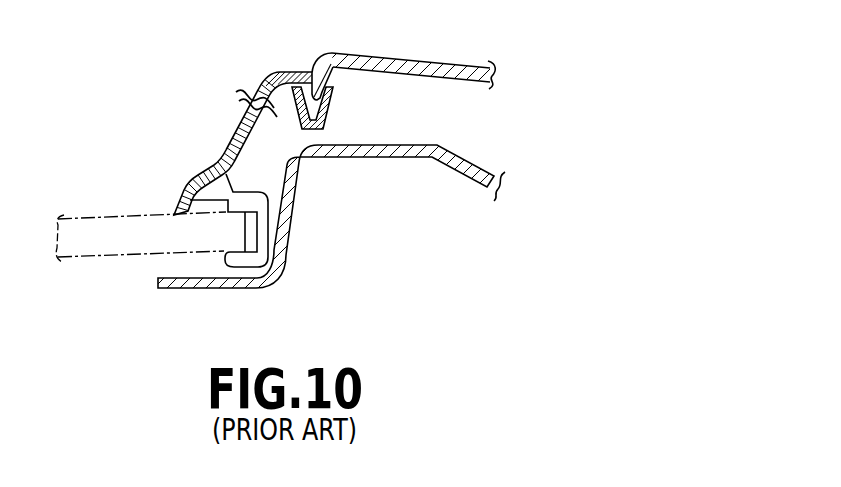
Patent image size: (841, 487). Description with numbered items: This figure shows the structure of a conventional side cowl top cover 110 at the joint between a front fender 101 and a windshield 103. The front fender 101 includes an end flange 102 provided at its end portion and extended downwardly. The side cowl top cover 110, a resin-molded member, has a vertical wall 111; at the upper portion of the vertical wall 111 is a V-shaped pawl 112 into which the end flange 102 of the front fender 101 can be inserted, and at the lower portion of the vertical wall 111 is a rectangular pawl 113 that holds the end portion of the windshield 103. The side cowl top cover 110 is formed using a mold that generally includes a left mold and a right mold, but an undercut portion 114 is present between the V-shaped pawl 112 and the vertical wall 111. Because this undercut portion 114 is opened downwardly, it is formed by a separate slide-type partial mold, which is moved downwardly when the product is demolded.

The front fender 101 is at (397, 59).
The end flange 102 is at (331, 77).
The windshield 103 is at (99, 257).
The side cowl top cover 110 is at (239, 117).
The vertical wall 111 is at (231, 149).
The V-shaped pawl 112 is at (330, 107).
The rectangular pawl 113 is at (270, 222).
The undercut portion 114 is at (282, 101).